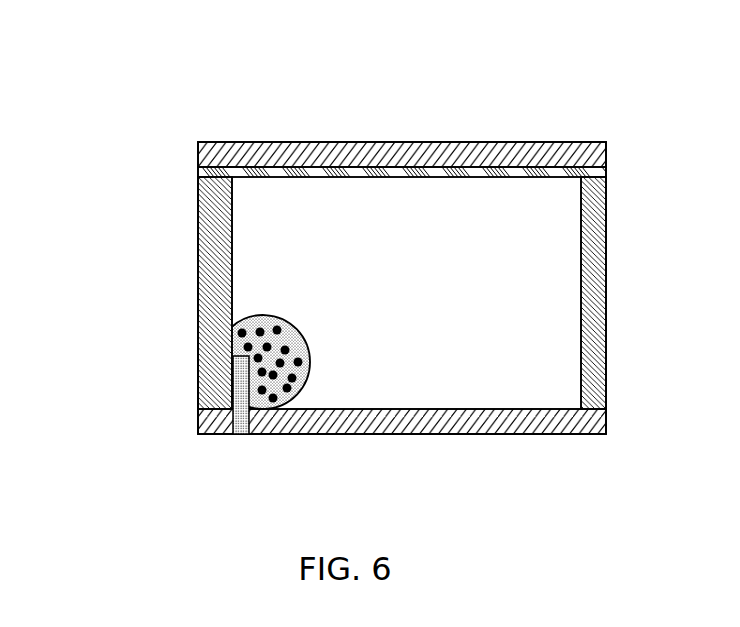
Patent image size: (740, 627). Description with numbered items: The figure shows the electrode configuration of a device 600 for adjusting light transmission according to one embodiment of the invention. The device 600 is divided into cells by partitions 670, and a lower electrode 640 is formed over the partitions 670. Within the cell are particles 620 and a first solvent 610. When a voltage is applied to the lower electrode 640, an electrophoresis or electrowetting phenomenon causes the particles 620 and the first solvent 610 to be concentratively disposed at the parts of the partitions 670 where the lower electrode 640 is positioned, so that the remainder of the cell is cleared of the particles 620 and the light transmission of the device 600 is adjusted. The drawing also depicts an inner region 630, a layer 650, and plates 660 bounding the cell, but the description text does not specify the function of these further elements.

The device for adjusting light transmission 600 is at (143, 44).
The first solvent 610 is at (213, 308).
The particles 620 is at (242, 337).
The inner space 630 is at (258, 238).
The lower electrode 640 is at (243, 434).
The adhesive layer 650 is at (210, 171).
The substrate plate 660 is at (198, 155).
The partitions 670 is at (213, 363).